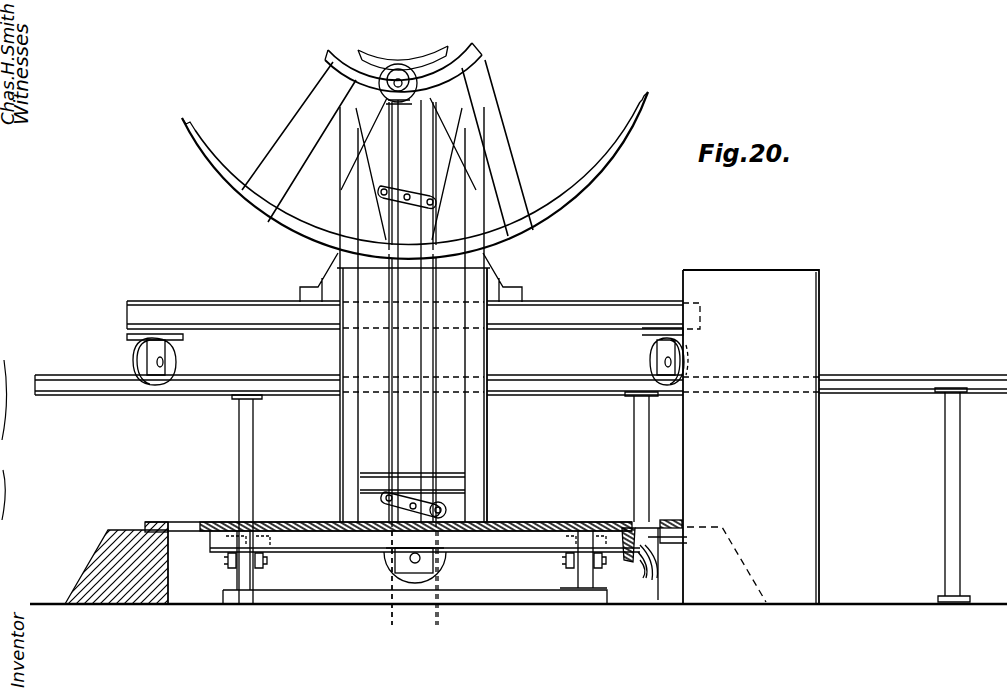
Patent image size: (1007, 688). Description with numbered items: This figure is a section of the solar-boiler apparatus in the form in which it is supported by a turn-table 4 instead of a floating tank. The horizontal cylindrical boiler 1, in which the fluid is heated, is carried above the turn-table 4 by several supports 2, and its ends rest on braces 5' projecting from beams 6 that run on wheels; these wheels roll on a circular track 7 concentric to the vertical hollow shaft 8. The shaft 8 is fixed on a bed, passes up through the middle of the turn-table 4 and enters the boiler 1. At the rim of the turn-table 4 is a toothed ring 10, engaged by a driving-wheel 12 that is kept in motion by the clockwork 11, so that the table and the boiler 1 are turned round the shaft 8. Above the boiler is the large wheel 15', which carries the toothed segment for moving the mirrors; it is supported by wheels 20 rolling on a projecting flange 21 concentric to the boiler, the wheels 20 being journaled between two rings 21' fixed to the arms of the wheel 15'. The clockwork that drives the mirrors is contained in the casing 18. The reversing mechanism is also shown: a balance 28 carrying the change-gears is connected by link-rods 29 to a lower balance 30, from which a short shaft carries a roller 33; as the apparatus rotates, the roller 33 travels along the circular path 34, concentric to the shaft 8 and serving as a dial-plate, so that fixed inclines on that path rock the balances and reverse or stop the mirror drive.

The boiler 1 is at (401, 66).
The projecting flange 21 is at (413, 67).
The rings 21' is at (404, 66).
The wheels 20 is at (401, 111).
The hollow shaft 8 is at (390, 128).
The balance 28 is at (398, 192).
The wheel 15' is at (415, 175).
The braces 5' is at (411, 277).
The beams 6 is at (413, 343).
The circular track 7 is at (86, 390).
The link-rods 29 is at (444, 428).
The supports 2 is at (413, 310).
The casing 18 is at (490, 466).
The clockwork 11 is at (751, 437).
The circular path 34 is at (118, 554).
The toothed ring 10 is at (413, 517).
The turn-table 4 is at (303, 548).
The balance 30 is at (410, 497).
The roller 33 is at (446, 508).
The driving-wheel 12 is at (630, 567).